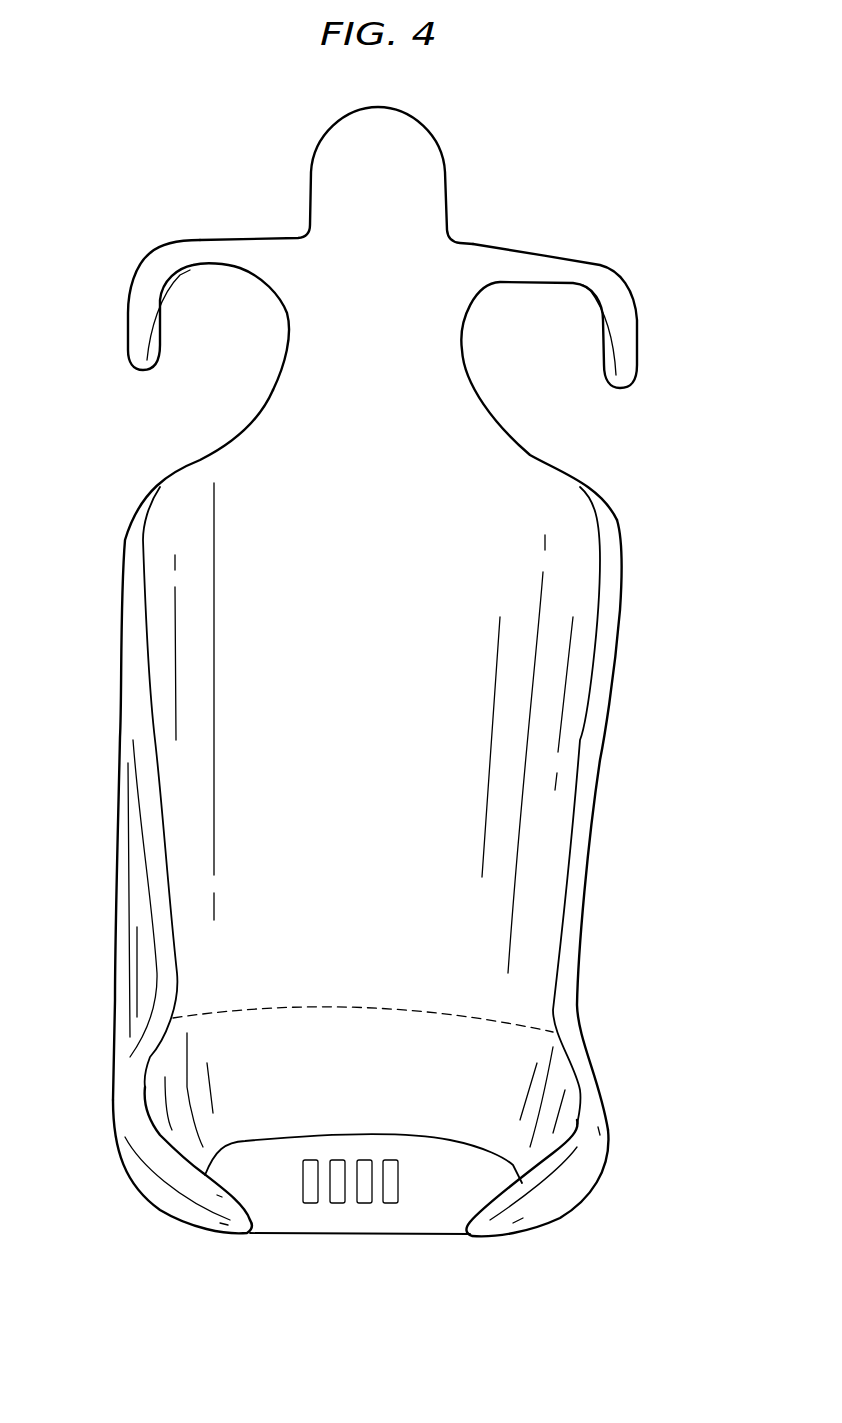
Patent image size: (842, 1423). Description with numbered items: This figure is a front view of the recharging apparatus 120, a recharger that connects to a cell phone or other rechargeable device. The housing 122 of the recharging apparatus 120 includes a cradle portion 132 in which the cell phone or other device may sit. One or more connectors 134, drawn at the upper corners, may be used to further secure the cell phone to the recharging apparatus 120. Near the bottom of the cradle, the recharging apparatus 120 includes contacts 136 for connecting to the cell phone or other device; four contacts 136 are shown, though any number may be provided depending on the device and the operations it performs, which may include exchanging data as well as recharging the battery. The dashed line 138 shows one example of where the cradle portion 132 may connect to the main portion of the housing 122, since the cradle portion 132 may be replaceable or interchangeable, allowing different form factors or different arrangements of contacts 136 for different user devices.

The recharging apparatus 120 is at (566, 100).
The housing 122 is at (588, 768).
The cradle portion 132 is at (626, 1083).
The connectors 134 is at (142, 305).
The contacts 136 is at (396, 1224).
The dashed line 138 is at (356, 1007).